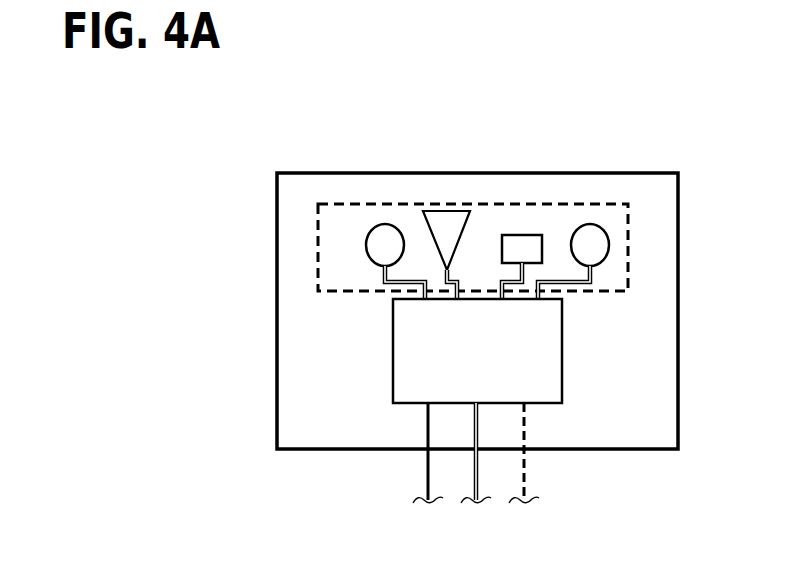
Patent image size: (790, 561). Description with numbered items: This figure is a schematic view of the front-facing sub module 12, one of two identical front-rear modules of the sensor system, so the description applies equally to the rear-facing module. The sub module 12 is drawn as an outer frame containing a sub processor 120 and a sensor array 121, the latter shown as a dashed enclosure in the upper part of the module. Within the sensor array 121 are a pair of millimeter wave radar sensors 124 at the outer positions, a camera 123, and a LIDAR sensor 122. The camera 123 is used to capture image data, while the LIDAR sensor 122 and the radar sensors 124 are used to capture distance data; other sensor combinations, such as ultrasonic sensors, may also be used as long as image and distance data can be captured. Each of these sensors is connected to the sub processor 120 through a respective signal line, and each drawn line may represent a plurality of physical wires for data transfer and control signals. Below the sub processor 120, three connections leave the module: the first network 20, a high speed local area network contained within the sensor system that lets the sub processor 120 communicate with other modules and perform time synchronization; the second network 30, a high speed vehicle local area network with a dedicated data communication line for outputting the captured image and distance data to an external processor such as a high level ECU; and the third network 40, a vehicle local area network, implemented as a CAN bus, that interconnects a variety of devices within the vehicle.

The front-facing sub module 12 is at (627, 173).
The sensor array 121 is at (342, 204).
The millimeter wave radar sensor 124 is at (386, 224).
The camera 123 is at (447, 211).
The LIDAR sensor 122 is at (522, 235).
The sub processor 120 is at (562, 348).
The third network 40 is at (428, 474).
The second network 30 is at (477, 474).
The first network 20 is at (524, 474).